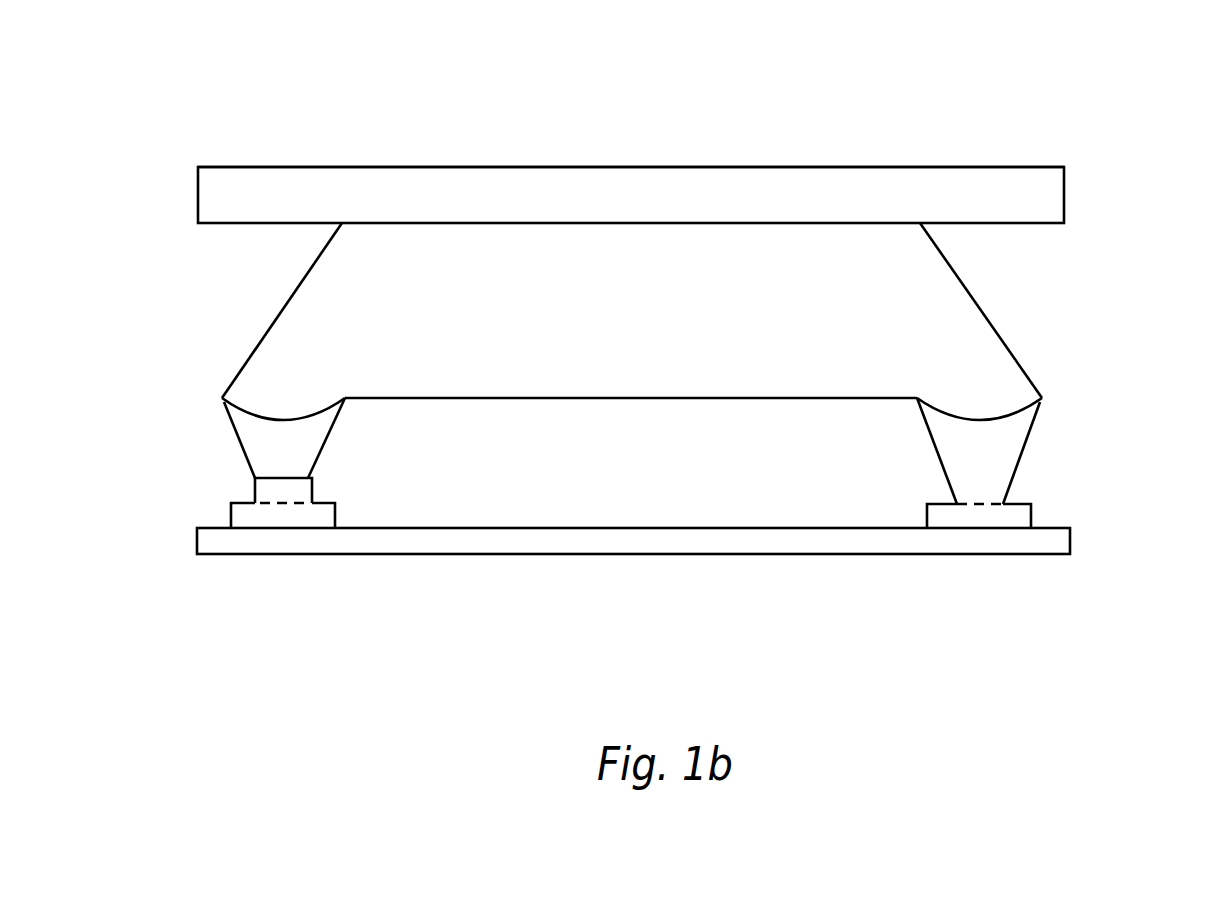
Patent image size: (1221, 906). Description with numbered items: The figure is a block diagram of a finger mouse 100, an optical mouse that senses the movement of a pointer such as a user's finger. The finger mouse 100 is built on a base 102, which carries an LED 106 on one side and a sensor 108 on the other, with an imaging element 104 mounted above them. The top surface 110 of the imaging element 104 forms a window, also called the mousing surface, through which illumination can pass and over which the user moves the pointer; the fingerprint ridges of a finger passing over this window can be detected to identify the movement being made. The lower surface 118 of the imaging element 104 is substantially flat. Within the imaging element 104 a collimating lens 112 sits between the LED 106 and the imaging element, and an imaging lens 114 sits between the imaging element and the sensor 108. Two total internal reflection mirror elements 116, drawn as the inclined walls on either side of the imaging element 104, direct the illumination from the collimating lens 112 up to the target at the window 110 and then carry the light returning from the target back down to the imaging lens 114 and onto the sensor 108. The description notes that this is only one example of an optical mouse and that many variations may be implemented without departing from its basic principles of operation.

The finger mouse 100 is at (1108, 120).
The base 102 is at (728, 554).
The imaging element 104 is at (342, 167).
The LED 106 is at (254, 497).
The sensor 108 is at (1031, 513).
The top surface 110 is at (655, 167).
The collimating lens 112 is at (243, 422).
The imaging lens 114 is at (1028, 420).
The total internal reflection mirror elements 116 is at (272, 323).
The lower surface 118 is at (702, 398).